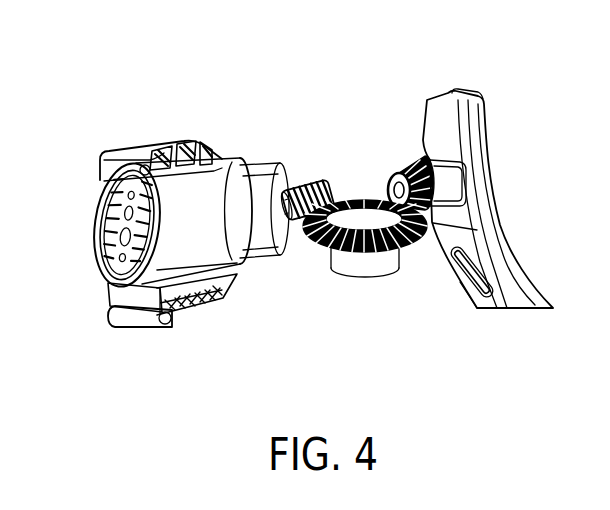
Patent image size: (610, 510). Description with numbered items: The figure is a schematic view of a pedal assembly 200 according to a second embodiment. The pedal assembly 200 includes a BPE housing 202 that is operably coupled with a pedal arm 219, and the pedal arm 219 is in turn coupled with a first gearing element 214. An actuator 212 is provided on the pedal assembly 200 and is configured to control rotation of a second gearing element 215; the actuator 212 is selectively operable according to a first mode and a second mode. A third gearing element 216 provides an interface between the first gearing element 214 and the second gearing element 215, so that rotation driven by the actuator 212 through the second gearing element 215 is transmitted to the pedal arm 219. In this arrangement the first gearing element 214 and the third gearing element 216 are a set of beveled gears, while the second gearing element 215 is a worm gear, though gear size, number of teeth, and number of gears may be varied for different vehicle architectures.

The pedal assembly 200 is at (176, 109).
The BPE housing 202 is at (185, 290).
The actuator 212 is at (273, 263).
The first gearing element 214 is at (404, 160).
The second gearing element 215 is at (305, 181).
The third gearing element 216 is at (343, 249).
The pedal arm 219 is at (483, 188).